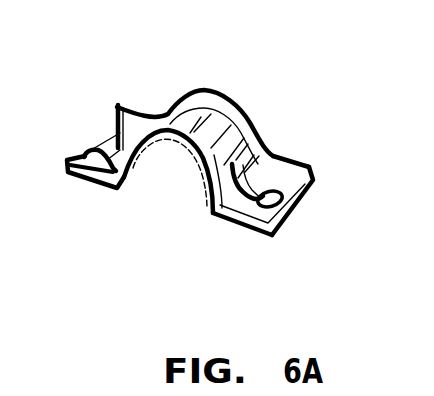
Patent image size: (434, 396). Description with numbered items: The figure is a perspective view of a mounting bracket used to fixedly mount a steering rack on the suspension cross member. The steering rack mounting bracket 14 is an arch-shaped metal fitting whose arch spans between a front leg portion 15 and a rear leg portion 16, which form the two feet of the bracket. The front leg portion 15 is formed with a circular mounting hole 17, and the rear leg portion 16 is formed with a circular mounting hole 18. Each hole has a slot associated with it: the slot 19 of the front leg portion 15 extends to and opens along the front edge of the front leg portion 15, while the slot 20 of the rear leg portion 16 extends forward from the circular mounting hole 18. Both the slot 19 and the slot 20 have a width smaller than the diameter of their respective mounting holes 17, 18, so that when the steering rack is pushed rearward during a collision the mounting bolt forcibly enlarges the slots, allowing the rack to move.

The steering rack mounting bracket 14 is at (240, 103).
The front leg portion 15 is at (87, 177).
The rear leg portion 16 is at (258, 237).
The circular mounting hole 17 is at (120, 104).
The circular mounting hole 18 is at (311, 170).
The slot 19 is at (102, 150).
The slot 20 is at (268, 160).